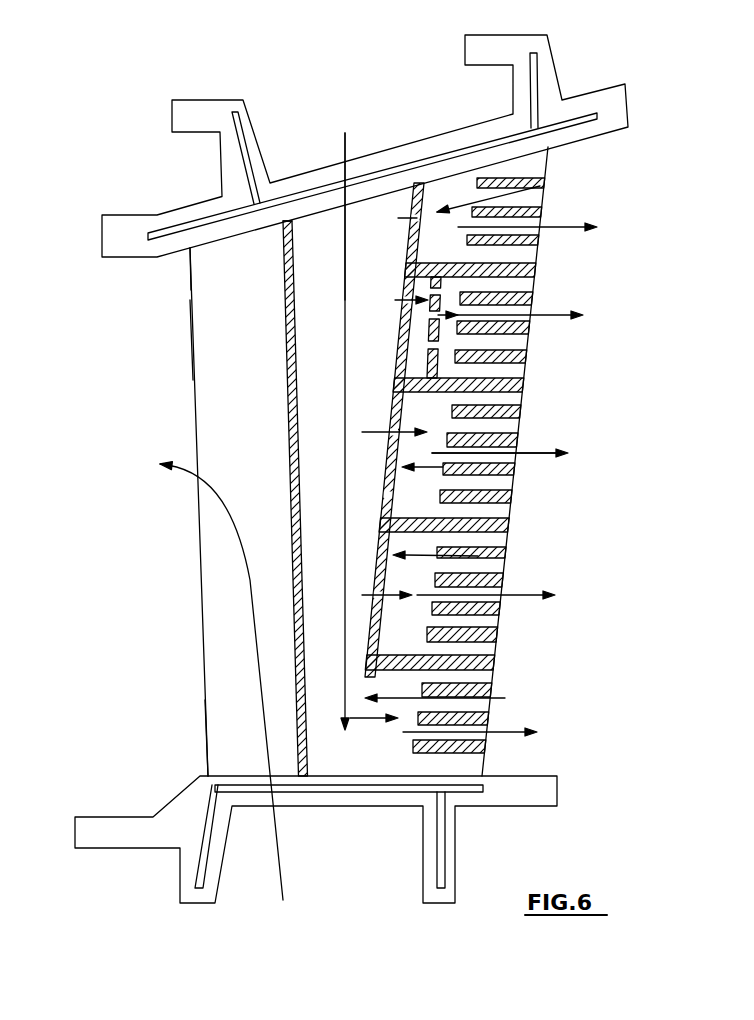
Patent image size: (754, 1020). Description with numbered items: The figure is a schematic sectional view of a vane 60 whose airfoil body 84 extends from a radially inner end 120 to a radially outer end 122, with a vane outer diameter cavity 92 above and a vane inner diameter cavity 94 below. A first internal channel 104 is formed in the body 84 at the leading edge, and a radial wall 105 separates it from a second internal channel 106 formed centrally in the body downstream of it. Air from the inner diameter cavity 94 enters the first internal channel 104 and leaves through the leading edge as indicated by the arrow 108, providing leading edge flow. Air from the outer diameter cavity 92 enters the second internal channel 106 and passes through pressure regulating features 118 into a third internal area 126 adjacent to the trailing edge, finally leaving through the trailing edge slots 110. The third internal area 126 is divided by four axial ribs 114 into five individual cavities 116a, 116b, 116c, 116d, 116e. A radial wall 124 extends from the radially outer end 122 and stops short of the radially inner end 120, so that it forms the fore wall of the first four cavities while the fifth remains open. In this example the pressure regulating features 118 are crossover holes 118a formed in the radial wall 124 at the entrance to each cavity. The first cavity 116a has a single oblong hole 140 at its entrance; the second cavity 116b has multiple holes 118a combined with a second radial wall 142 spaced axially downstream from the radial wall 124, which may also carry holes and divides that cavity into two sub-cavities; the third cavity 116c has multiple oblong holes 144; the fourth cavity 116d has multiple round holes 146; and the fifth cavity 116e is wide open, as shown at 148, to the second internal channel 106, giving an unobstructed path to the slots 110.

The vane 60 is at (662, 100).
The airfoil body 84 is at (215, 605).
The vane outer diameter cavity 92 is at (493, 98).
The vane inner diameter cavity 94 is at (402, 865).
The first internal channel 104 is at (210, 333).
The radial wall 105 is at (283, 250).
The second internal channel 106 is at (310, 215).
The arrow 108 is at (283, 866).
The slots 110 is at (532, 201).
The axial ribs 114 is at (540, 270).
The first cavity 116a is at (515, 172).
The second cavity 116b is at (455, 300).
The third cavity 116c is at (427, 409).
The fourth cavity 116d is at (408, 546).
The fifth cavity 116e is at (390, 684).
The pressure regulating features 118 is at (403, 205).
The crossover holes 118a is at (382, 490).
The radially inner end 120 is at (227, 753).
The radially outer end 122 is at (197, 256).
The radial wall 124 is at (408, 250).
The third internal area 126 is at (438, 190).
The single oblong hole 140 is at (495, 197).
The second radial wall 142 is at (395, 300).
The multiple oblong holes 144 is at (512, 470).
The multiple round holes 146 is at (478, 558).
The open flow path 148 is at (505, 700).